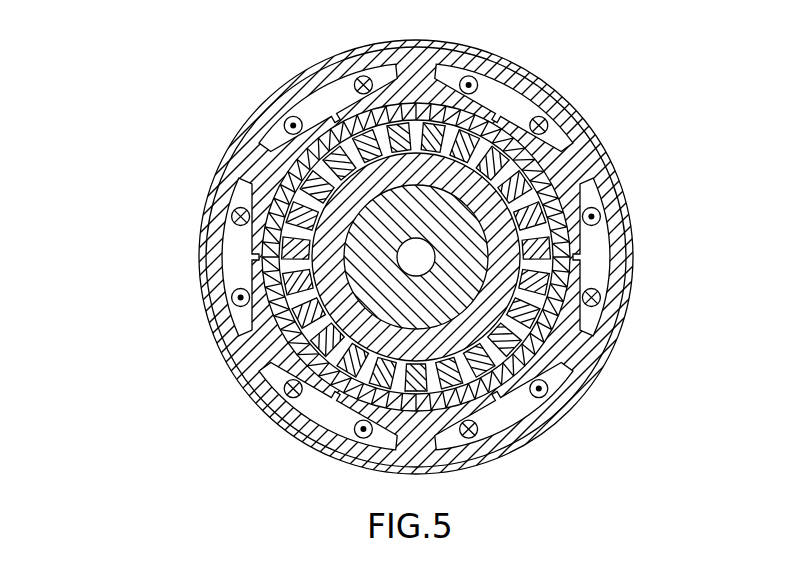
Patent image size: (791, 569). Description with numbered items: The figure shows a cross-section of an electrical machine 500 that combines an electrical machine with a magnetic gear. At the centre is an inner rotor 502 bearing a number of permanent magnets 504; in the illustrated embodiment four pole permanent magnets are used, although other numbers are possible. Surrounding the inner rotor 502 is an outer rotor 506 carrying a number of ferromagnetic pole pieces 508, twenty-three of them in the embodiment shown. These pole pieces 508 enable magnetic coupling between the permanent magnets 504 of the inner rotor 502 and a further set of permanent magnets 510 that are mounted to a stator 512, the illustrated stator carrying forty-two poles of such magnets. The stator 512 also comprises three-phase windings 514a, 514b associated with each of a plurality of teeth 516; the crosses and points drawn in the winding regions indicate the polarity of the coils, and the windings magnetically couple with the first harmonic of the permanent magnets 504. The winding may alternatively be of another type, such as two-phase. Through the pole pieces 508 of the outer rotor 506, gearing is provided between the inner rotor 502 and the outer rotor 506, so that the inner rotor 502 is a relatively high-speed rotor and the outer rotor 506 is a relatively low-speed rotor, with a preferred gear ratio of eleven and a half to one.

The electrical machine 500 is at (236, 86).
The inner rotor 502 is at (393, 247).
The permanent magnets 504 is at (456, 183).
The outer rotor 506 is at (523, 333).
The ferromagnetic pole pieces 508 is at (540, 178).
The permanent magnets 510 is at (287, 177).
The stator 512 is at (202, 226).
The winding 514a is at (285, 392).
The winding 514b is at (231, 296).
The teeth 516 is at (246, 363).